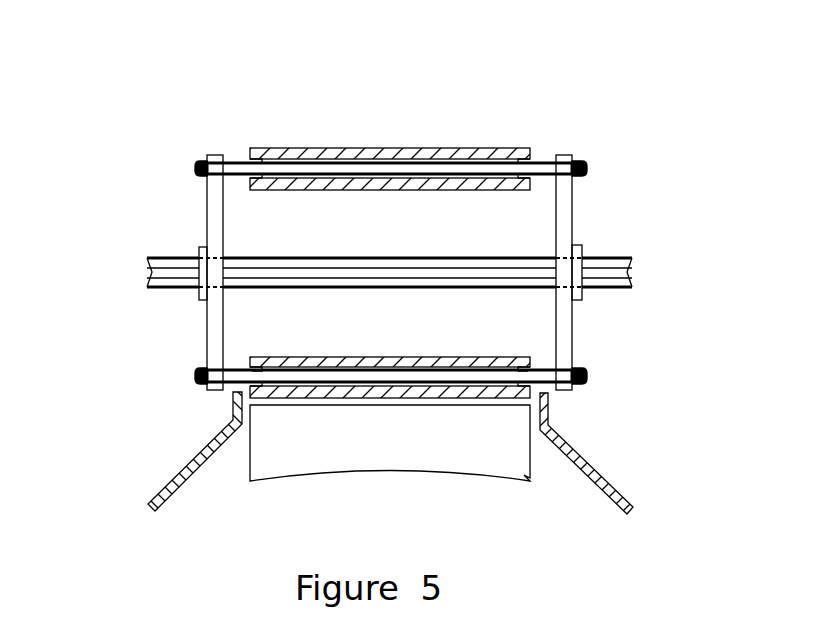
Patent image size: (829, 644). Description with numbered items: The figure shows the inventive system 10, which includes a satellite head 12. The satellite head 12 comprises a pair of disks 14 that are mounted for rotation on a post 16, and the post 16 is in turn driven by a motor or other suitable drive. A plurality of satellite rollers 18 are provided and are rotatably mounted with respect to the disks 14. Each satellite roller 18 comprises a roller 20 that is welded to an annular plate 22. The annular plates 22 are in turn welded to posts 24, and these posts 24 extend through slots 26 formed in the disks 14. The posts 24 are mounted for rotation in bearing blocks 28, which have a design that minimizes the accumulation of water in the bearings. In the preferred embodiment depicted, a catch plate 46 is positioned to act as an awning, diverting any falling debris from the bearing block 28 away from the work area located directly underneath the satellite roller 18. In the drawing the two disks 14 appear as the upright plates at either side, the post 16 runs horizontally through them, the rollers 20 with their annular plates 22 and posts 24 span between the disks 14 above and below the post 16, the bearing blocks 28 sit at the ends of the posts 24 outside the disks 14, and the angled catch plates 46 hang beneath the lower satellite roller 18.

The system 10 is at (193, 78).
The satellite head 12 is at (207, 212).
The disks 14 is at (572, 215).
The post 16 is at (443, 258).
The satellite rollers 18 is at (300, 148).
The roller 20 is at (455, 190).
The annular plate 22 is at (262, 180).
The posts 24 is at (445, 150).
The slots 26 is at (574, 160).
The bearing blocks 28 is at (197, 160).
The catch plate 46 is at (590, 455).